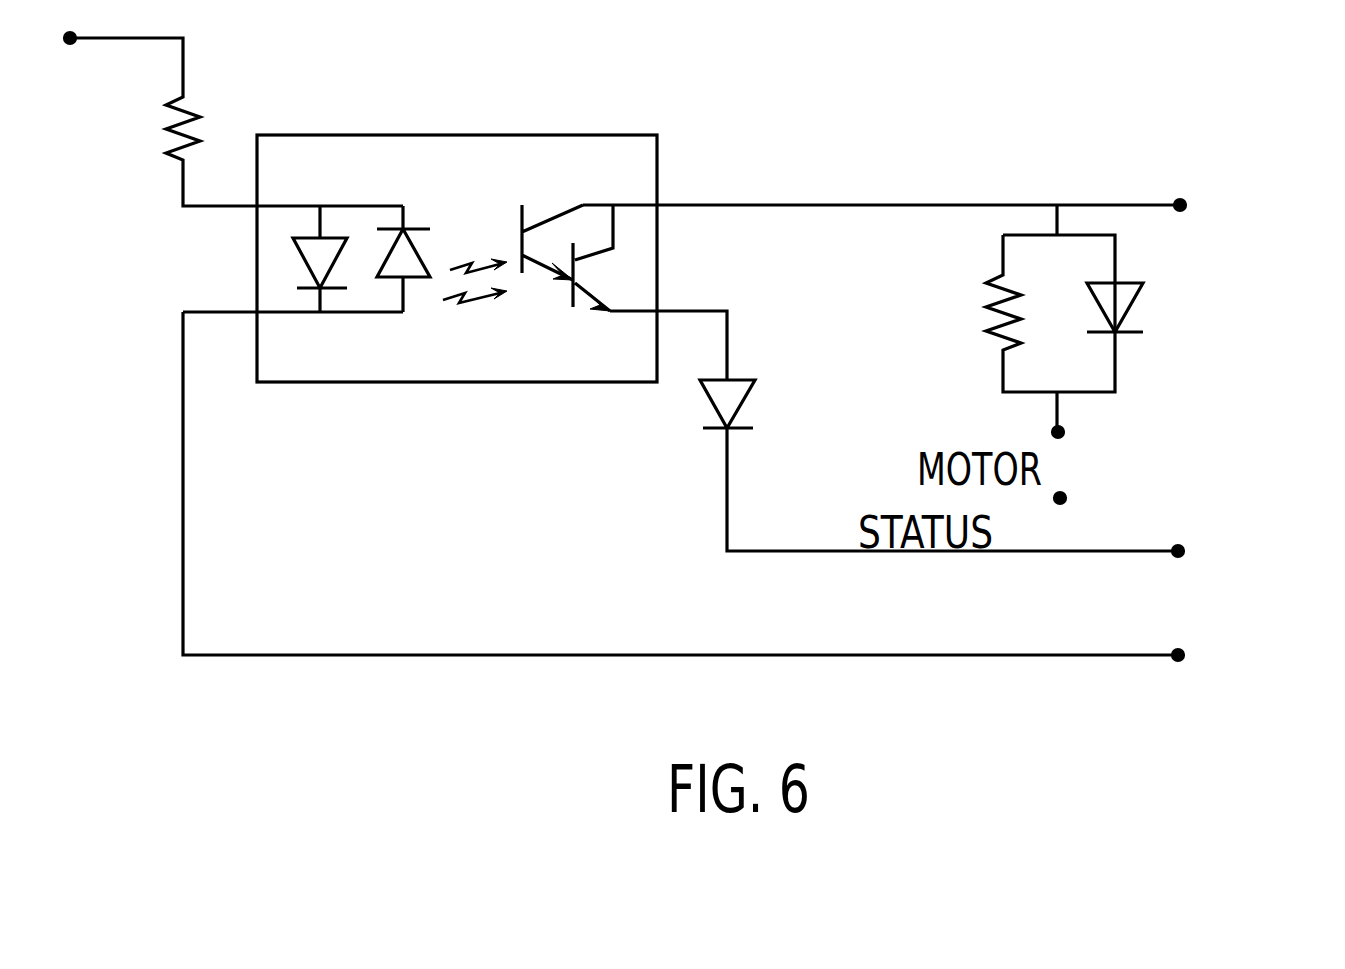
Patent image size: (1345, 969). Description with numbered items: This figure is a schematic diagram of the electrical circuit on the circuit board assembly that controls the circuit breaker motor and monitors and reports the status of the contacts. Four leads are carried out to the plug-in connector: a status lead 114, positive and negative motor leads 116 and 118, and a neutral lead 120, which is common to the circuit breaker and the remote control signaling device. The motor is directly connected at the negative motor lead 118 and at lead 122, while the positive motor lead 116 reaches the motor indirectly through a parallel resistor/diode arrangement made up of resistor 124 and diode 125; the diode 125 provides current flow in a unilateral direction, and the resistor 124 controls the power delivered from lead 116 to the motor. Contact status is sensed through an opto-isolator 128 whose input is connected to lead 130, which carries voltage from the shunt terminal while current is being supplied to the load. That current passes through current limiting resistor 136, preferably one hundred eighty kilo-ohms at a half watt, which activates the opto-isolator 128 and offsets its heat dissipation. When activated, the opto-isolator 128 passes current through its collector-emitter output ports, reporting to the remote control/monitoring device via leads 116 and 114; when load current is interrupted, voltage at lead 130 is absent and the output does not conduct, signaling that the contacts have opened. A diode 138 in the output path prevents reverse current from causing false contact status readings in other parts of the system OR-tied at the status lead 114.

The lead 130 is at (68, 46).
The current limiting resistor 136 is at (197, 100).
The opto-isolator 128 is at (530, 135).
The diode 138 is at (710, 402).
The positive motor lead 116 is at (1185, 204).
The resistor 124 is at (998, 305).
The diode 125 is at (1140, 297).
The lead 122 is at (1060, 432).
The negative motor lead 118 is at (1063, 498).
The status lead 114 is at (1183, 551).
The neutral lead 120 is at (1183, 654).